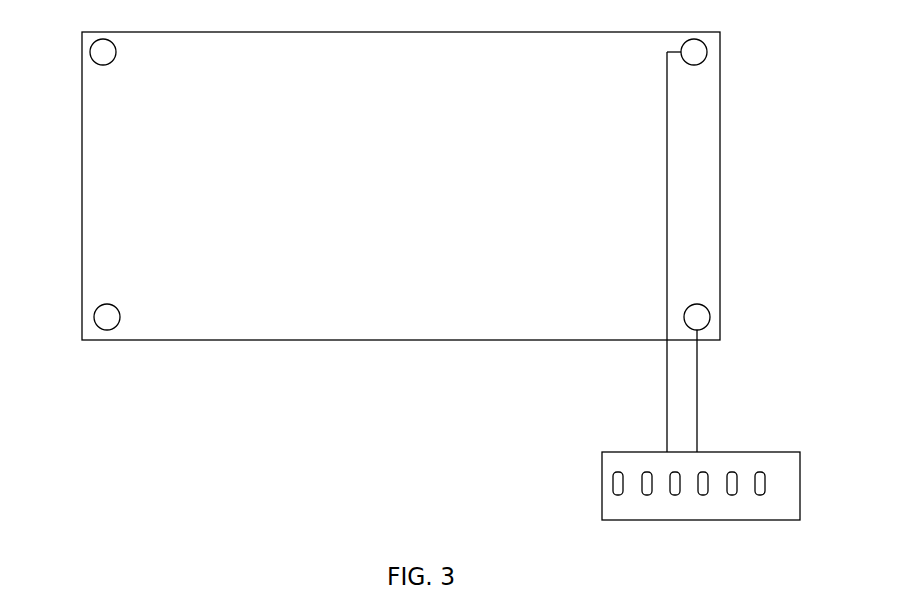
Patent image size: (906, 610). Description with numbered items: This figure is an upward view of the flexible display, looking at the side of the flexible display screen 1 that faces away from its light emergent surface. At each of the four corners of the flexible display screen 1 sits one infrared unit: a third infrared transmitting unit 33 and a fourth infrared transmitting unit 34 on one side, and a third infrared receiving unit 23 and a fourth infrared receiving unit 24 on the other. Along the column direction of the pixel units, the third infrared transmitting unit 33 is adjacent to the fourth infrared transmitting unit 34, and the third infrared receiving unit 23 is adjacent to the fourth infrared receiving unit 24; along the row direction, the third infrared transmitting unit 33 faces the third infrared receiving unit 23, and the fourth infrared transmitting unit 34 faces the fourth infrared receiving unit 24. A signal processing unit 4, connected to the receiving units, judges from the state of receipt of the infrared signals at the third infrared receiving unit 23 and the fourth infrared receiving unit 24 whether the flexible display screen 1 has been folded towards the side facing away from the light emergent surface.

The flexible display screen 1 is at (593, 333).
The signal processing unit 4 is at (601, 485).
The third infrared receiving unit 23 is at (700, 310).
The fourth infrared receiving unit 24 is at (697, 54).
The third infrared transmitting unit 33 is at (105, 318).
The fourth infrared transmitting unit 34 is at (99, 52).